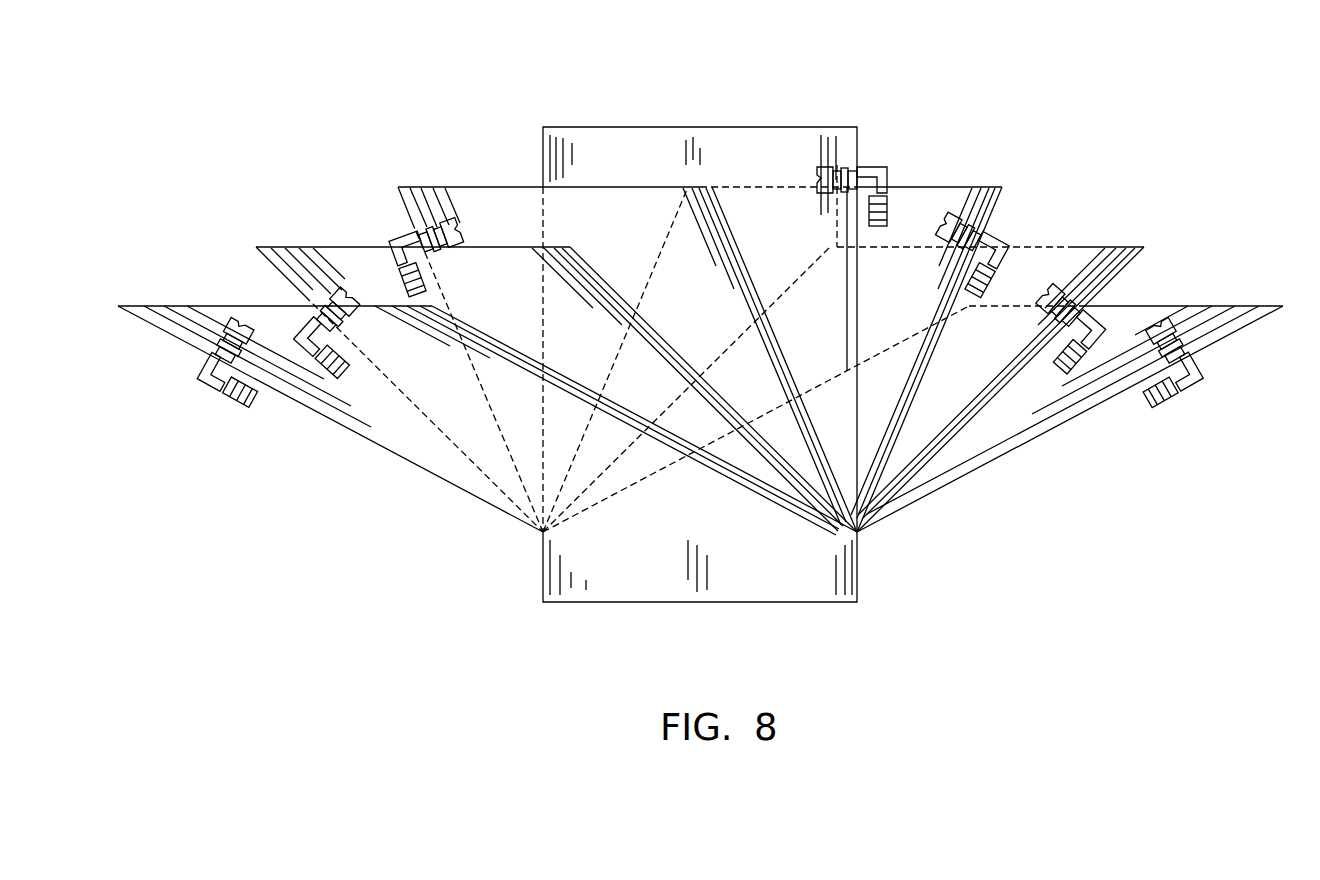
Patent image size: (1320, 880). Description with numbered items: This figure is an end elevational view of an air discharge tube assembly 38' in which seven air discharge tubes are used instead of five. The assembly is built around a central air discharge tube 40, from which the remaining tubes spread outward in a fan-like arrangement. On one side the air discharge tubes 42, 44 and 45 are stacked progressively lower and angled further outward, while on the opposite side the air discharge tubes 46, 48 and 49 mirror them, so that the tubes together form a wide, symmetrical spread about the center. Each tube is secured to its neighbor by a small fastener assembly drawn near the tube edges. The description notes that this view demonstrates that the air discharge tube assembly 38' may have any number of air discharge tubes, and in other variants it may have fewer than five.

The air discharge tube assembly 38' is at (700, 303).
The air discharge tube 40 is at (757, 127).
The air discharge tube 42 is at (486, 186).
The air discharge tube 44 is at (325, 246).
The air discharge tube 45 is at (422, 456).
The air discharge tube 46 is at (963, 186).
The air discharge tube 48 is at (1072, 249).
The air discharge tube 49 is at (1085, 400).